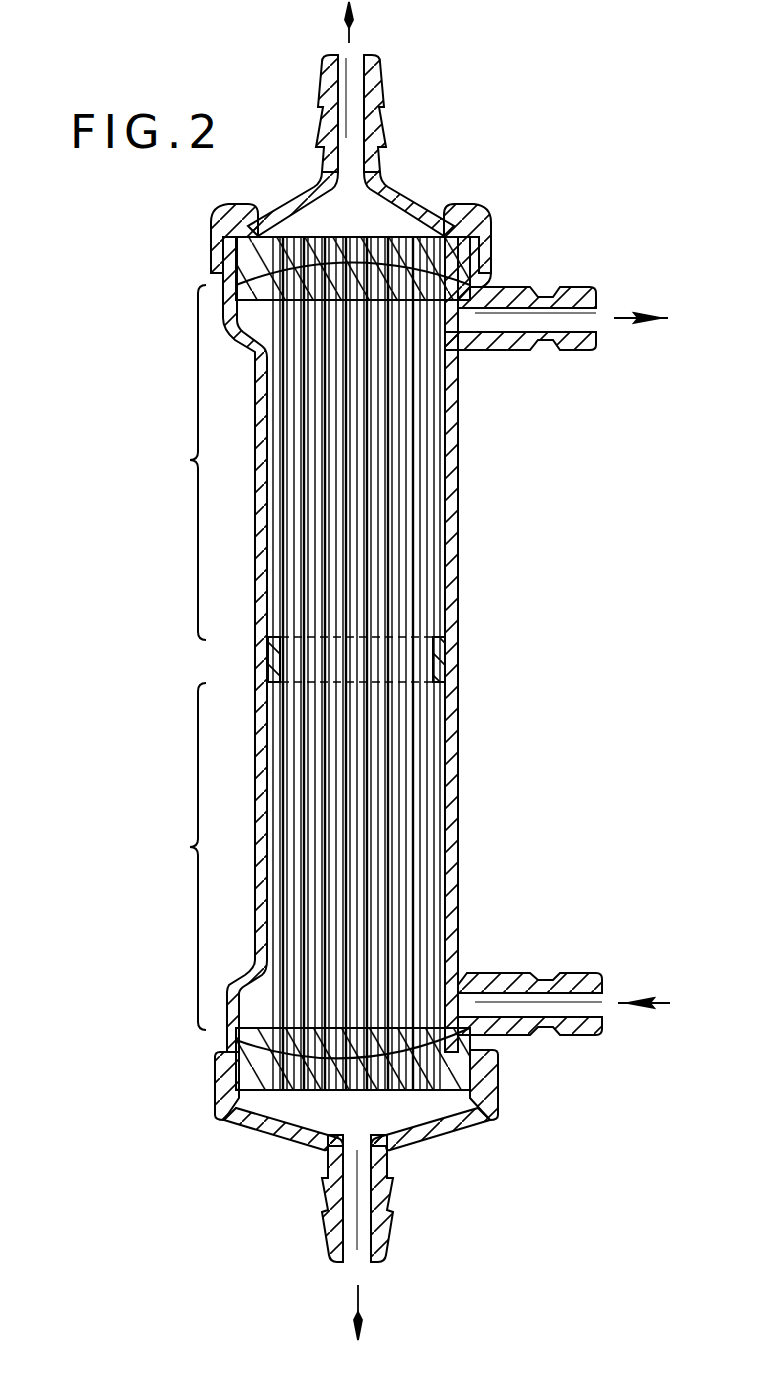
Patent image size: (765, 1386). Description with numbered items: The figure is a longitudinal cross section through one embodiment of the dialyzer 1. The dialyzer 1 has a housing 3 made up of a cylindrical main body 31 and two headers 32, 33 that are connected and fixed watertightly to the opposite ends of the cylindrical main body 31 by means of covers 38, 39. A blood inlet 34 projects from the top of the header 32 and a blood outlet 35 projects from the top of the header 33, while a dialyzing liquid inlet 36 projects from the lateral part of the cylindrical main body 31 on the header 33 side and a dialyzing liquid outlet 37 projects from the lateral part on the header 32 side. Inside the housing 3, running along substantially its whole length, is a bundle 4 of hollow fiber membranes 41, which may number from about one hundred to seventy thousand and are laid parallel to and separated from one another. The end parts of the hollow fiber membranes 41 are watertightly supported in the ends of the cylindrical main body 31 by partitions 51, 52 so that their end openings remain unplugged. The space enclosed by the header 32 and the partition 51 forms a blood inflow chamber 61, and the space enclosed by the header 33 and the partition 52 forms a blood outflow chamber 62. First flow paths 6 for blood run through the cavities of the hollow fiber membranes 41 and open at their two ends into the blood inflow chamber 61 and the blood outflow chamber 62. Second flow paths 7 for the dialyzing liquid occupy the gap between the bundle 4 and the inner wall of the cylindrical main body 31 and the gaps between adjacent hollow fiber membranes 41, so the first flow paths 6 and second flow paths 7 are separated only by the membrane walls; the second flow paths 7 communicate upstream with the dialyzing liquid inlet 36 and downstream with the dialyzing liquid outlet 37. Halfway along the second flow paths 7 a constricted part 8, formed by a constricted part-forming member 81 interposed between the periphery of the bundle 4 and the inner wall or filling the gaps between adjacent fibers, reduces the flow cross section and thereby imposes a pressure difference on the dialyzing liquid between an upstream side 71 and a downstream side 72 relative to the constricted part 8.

The dialyzer 1 is at (363, 658).
The housing 3 is at (388, 644).
The cylindrical main body 31 is at (450, 441).
The header 32 is at (404, 192).
The header 33 is at (402, 1128).
The blood inlet 34 is at (357, 102).
The blood outlet 35 is at (362, 1238).
The dialyzing liquid inlet 36 is at (561, 1012).
The dialyzing liquid outlet 37 is at (560, 322).
The cover 38 is at (466, 204).
The cover 39 is at (465, 1106).
The bundle 4 is at (437, 590).
The hollow fiber membranes 41 is at (420, 782).
The first flow paths 6 is at (420, 912).
The second flow paths 7 is at (412, 843).
The constricted part 8 is at (420, 660).
The constricted part-forming member 81 is at (440, 640).
The partition 51 is at (257, 258).
The partition 52 is at (262, 1056).
The blood inflow chamber 61 is at (322, 217).
The blood outflow chamber 62 is at (318, 1108).
The upstream side 71 is at (174, 856).
The downstream side 72 is at (174, 462).